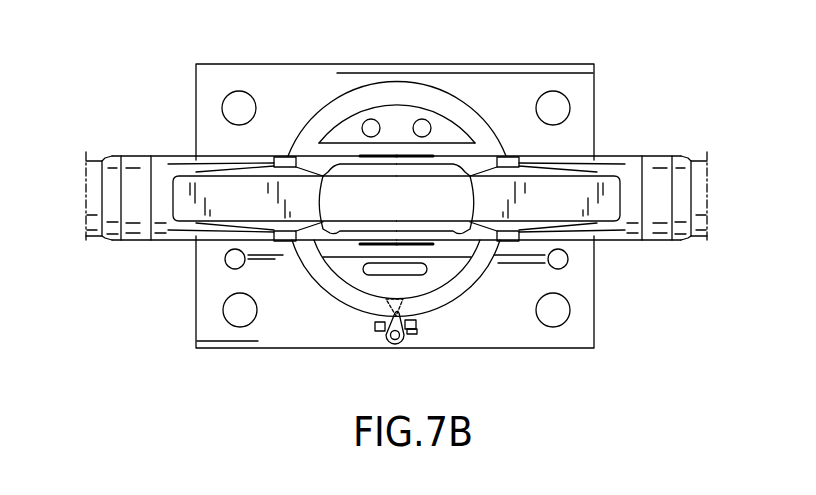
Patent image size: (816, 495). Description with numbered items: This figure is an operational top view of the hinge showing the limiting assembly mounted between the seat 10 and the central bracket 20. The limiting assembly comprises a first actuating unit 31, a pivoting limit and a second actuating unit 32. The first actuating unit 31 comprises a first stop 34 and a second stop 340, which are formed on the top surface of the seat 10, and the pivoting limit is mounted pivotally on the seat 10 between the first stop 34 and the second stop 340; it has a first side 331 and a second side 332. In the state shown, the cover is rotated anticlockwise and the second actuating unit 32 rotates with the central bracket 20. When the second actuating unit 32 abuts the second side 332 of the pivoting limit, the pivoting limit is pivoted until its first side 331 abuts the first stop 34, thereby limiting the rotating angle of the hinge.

The seat 10 is at (535, 73).
The central bracket 20 is at (440, 82).
The first actuating unit 31 is at (394, 353).
The second actuating unit 32 is at (386, 304).
The first side 331 is at (412, 324).
The second side 332 is at (376, 323).
The first stop 34 is at (415, 331).
The second stop 340 is at (383, 332).